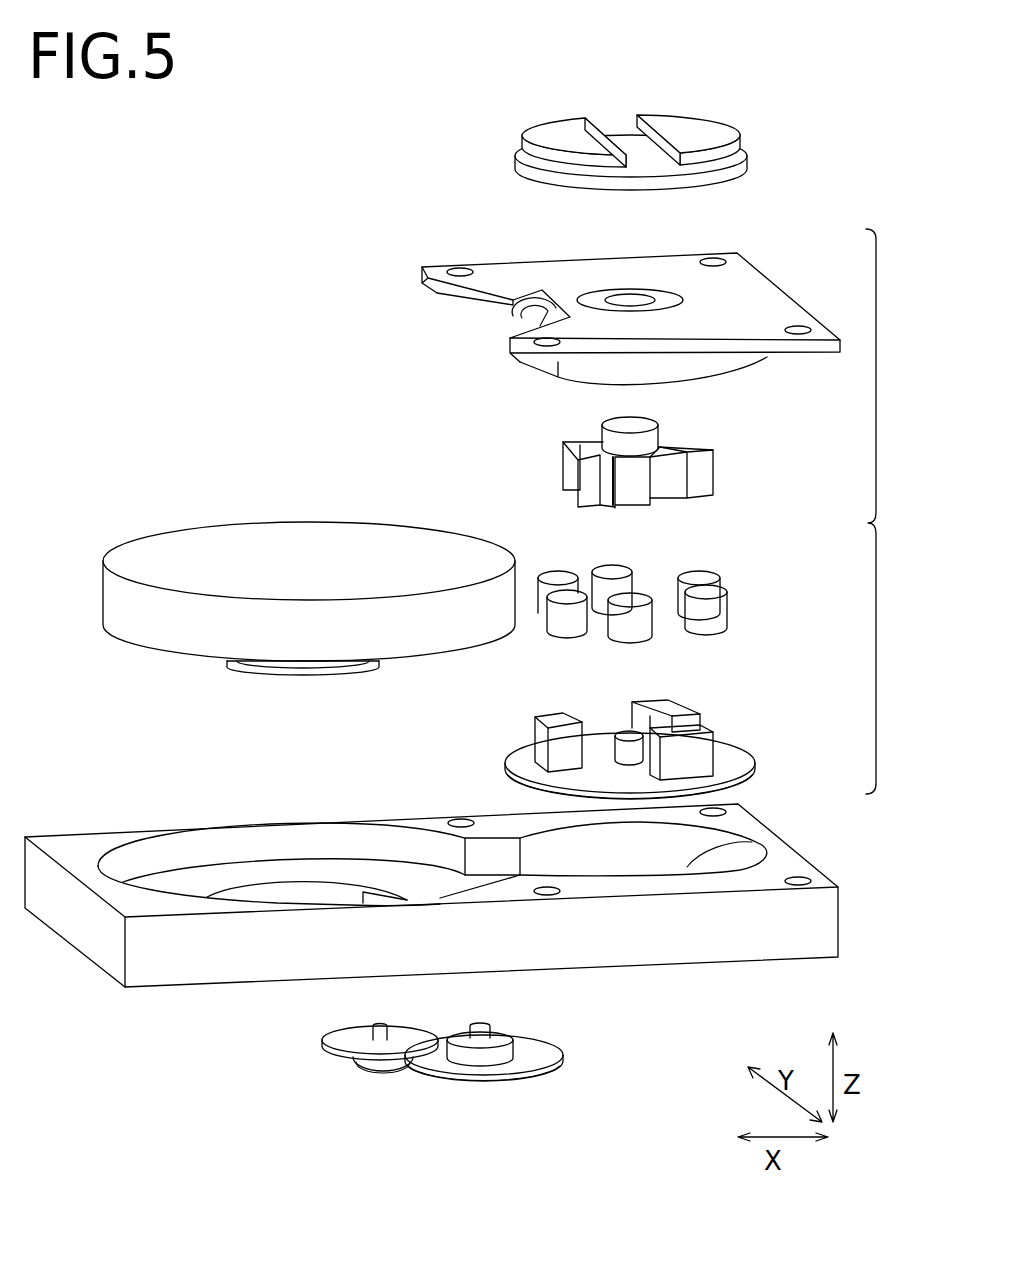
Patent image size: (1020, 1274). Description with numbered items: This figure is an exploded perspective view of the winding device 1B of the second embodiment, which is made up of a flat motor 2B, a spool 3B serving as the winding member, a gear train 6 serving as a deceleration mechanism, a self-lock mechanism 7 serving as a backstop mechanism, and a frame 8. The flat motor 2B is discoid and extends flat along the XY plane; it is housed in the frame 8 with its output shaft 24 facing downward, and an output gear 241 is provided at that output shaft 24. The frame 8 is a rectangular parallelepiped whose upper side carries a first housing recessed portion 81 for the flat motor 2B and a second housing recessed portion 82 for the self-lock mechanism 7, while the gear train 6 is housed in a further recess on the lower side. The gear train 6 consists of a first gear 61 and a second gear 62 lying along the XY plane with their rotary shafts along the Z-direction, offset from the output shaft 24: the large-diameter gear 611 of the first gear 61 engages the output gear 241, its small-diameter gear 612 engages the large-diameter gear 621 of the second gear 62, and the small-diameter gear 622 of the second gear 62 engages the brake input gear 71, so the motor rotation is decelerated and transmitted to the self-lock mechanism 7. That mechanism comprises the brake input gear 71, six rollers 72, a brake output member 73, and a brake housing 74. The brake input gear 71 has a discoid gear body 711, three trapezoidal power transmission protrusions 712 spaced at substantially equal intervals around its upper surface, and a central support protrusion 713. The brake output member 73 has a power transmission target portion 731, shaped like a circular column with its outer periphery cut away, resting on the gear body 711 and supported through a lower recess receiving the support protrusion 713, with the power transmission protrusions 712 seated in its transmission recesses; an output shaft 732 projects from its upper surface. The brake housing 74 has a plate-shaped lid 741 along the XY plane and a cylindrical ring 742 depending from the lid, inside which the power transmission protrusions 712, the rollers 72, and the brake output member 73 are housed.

The winding device 1B is at (143, 222).
The flat motor 2B is at (308, 537).
The output shaft 24 is at (295, 672).
The output gear 241 is at (342, 670).
The spool 3B is at (558, 128).
The gear train 6 is at (435, 1080).
The first gear 61 is at (350, 1032).
The large-diameter gear 611 is at (333, 1050).
The small-diameter gear 612 is at (380, 1073).
The second gear 62 is at (545, 1048).
The large-diameter gear 621 is at (527, 1073).
The small-diameter gear 622 is at (497, 1048).
The self-lock mechanism 7 is at (883, 511).
The brake input gear 71 is at (728, 758).
The gear body 711 is at (737, 778).
The power transmission protrusions 712 is at (563, 738).
The support protrusion 713 is at (620, 733).
The rollers 72 is at (637, 587).
The brake output member 73 is at (657, 462).
The power transmission target portion 731 is at (630, 478).
The output shaft 732 is at (607, 433).
The brake housing 74 is at (758, 297).
The lid 741 is at (562, 278).
The cylindrical ring 742 is at (740, 362).
The frame 8 is at (82, 928).
The first housing recessed portion 81 is at (178, 879).
The second housing recessed portion 82 is at (685, 865).